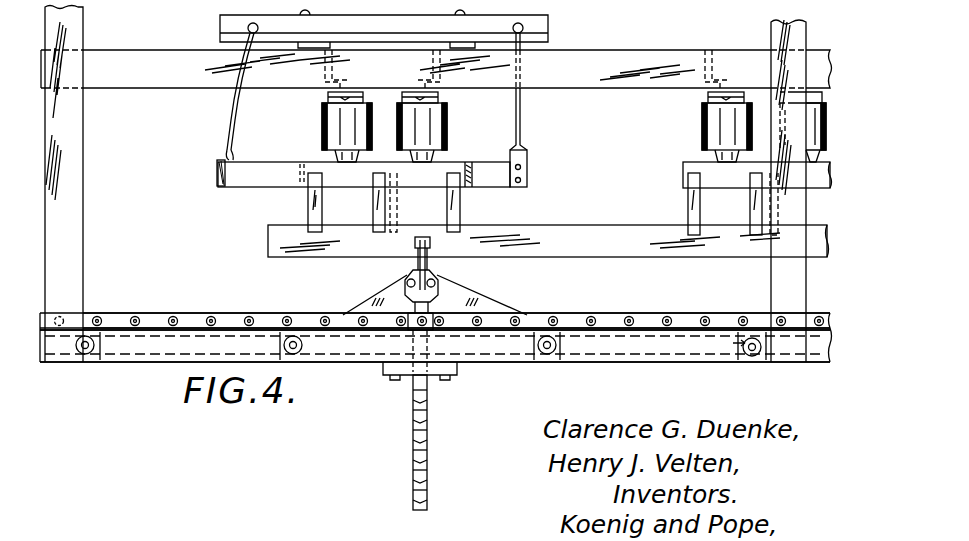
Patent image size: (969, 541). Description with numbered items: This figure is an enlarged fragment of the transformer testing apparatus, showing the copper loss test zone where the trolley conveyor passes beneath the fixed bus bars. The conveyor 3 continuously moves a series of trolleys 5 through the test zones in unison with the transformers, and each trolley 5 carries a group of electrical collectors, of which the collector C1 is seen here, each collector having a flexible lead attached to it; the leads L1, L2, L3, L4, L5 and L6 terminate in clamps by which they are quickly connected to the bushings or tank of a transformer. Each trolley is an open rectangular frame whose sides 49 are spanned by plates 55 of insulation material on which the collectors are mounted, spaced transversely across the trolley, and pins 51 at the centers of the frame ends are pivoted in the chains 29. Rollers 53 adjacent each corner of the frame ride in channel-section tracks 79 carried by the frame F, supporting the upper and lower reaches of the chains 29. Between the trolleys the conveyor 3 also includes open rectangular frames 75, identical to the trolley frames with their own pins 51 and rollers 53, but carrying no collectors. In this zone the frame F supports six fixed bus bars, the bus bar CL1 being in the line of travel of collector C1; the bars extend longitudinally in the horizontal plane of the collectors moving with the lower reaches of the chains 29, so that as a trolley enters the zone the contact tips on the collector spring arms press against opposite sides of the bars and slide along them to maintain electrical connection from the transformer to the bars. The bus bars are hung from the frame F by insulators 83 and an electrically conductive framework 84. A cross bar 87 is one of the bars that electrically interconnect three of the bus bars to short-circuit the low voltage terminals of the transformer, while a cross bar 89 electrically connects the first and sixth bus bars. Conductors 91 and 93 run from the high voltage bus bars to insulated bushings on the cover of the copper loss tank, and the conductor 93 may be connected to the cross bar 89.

The frame F is at (90, 144).
The conveyor 3 is at (165, 306).
The trolley 5 is at (344, 295).
The chains 29 is at (266, 320).
The sides of trolley frame 49 is at (280, 343).
The pins 51 is at (428, 331).
The rollers 53 is at (296, 355).
The plates of insulation material 55 is at (470, 300).
The open rectangular frames 75 is at (110, 362).
The channel-section tracks 79 is at (641, 361).
The insulators 83 is at (405, 128).
The electrically conductive framework 84 is at (244, 192).
The cross bar 87 is at (470, 172).
The cross bar 89 is at (216, 166).
The conductor 91 is at (521, 115).
The conductor 93 is at (233, 116).
The collector C1 is at (427, 268).
The bus bar CL1 is at (578, 240).
The lead L1 is at (413, 395).
The lead L2 is at (413, 416).
The lead L3 is at (413, 437).
The lead L4 is at (413, 457).
The lead L5 is at (413, 476).
The lead L6 is at (413, 497).